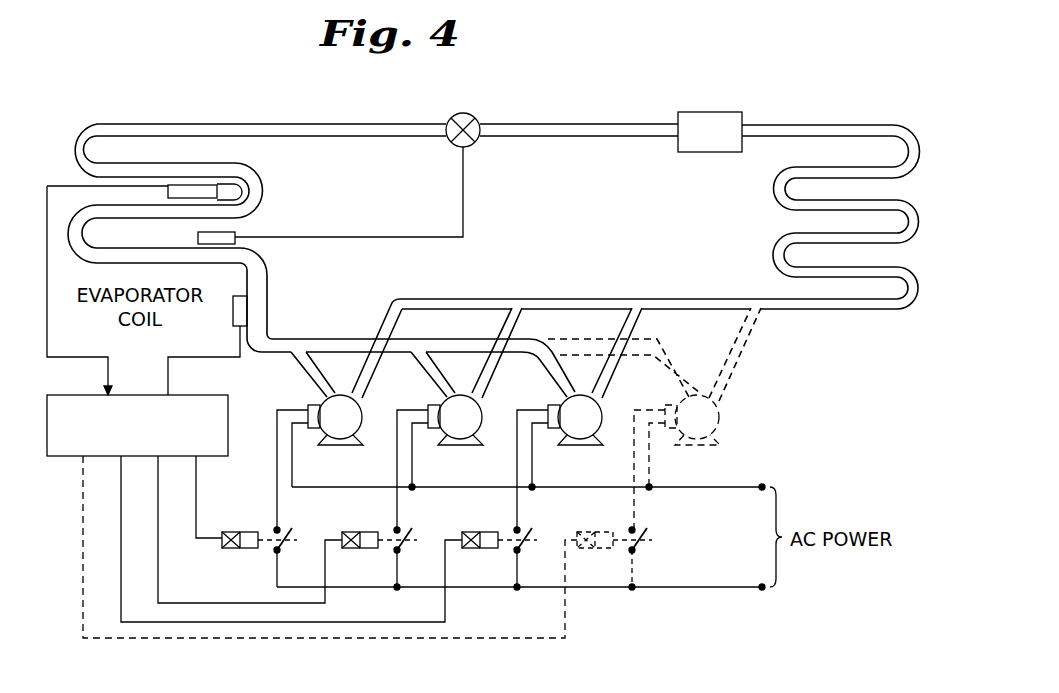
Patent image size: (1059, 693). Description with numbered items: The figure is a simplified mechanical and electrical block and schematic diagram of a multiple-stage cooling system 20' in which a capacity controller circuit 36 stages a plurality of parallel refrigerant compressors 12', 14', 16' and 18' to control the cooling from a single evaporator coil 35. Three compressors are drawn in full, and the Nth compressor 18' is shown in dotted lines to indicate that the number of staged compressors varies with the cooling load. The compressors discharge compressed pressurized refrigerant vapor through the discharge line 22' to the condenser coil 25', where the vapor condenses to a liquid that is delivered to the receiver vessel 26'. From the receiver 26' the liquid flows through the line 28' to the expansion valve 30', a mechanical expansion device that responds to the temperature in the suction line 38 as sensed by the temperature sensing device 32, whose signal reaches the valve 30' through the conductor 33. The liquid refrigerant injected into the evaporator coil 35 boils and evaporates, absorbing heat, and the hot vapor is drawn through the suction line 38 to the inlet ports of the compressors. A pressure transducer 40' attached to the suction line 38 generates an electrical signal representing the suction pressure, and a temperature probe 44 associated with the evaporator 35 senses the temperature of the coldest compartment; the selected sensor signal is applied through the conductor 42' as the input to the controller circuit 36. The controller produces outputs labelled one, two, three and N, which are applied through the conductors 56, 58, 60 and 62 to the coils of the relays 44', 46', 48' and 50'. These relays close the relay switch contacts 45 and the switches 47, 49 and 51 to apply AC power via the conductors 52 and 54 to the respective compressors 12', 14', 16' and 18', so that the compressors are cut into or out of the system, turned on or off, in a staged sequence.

The evaporator coil 35 is at (78, 123).
The temperature probe 44 is at (186, 283).
The temperature sensing device 32 is at (237, 236).
The conductor 33 is at (463, 187).
The expansion valve 30' is at (450, 114).
The cooling system 20' is at (541, 111).
The line 28' is at (588, 153).
The receiver vessel 26' is at (733, 119).
The condenser coil 25' is at (803, 246).
The discharge line 22' is at (556, 331).
The suction line 38 is at (266, 304).
The pressure transducer 40' is at (216, 319).
The conductor 42' is at (187, 360).
The capacity controller circuit 36 is at (65, 457).
The first compressor 12' is at (340, 451).
The second compressor 14' is at (460, 451).
The third compressor 16' is at (580, 451).
The Nth compressor 18' is at (705, 451).
The relay 44' is at (259, 513).
The relay 46' is at (367, 523).
The relay 48' is at (487, 523).
The relay 50' is at (607, 523).
The relay switch contacts 45 is at (286, 550).
The switch 47 is at (406, 550).
The switch 49 is at (526, 550).
The switch 51 is at (643, 550).
The conductor 52 is at (733, 488).
The conductor 54 is at (725, 563).
The conductor 56 is at (207, 540).
The conductor 58 is at (193, 606).
The conductor 60 is at (132, 624).
The conductor 62 is at (83, 573).